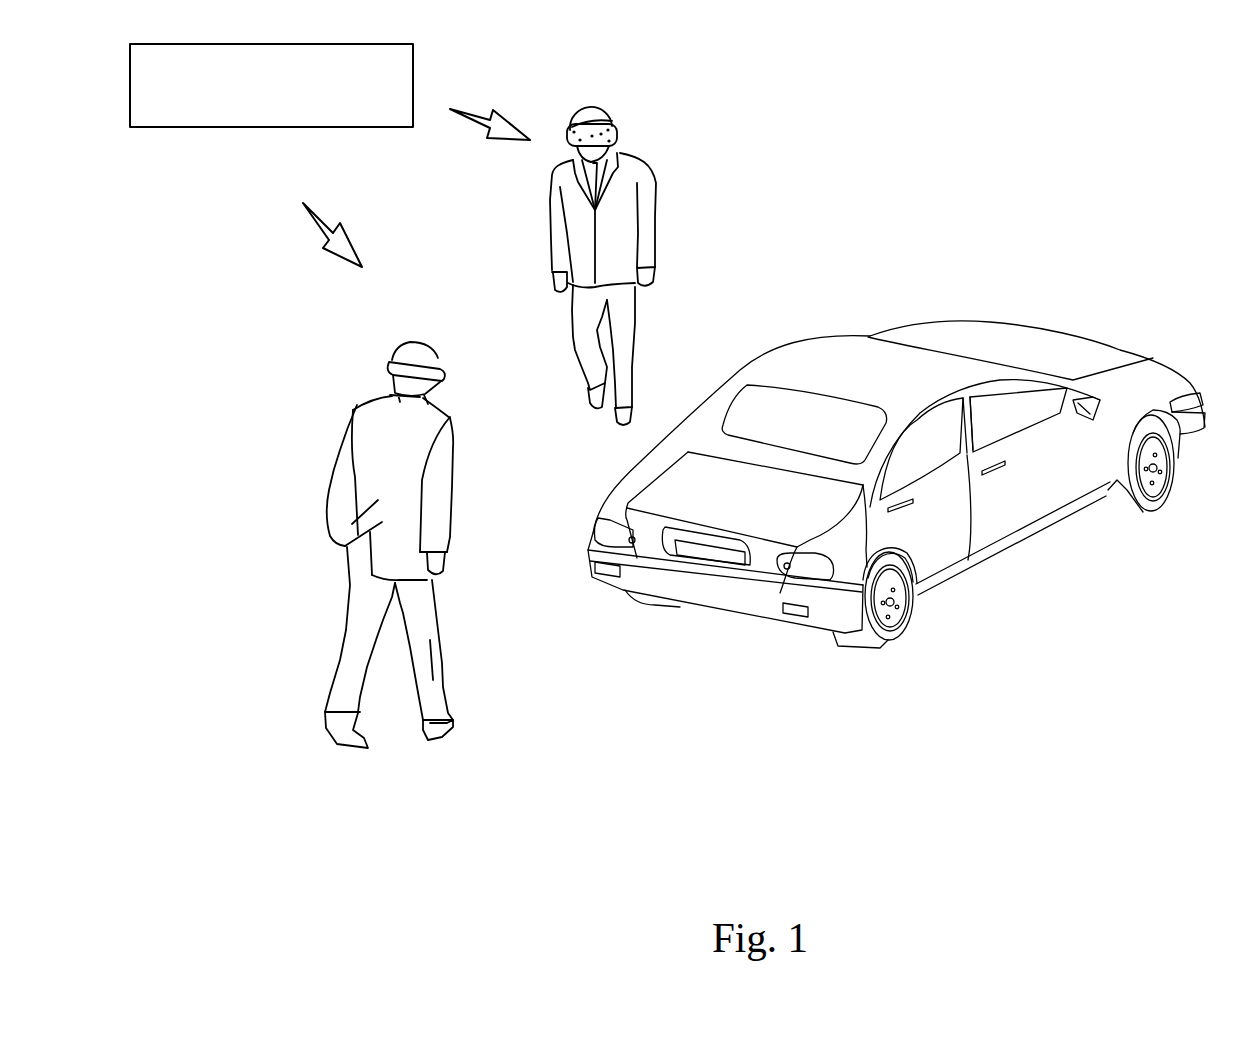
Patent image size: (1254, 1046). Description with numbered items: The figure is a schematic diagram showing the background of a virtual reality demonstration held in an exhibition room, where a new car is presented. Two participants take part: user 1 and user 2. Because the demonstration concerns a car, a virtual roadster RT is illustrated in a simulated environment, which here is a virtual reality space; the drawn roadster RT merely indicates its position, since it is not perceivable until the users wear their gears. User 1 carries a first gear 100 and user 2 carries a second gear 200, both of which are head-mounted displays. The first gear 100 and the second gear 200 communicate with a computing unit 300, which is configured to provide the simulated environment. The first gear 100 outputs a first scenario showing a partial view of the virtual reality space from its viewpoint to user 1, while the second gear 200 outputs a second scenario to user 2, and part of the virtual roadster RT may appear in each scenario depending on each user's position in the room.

The computing unit 300 is at (295, 113).
The second gear 200 is at (620, 131).
The user 2 is at (643, 254).
The first gear 100 is at (445, 378).
The user 1 is at (429, 533).
The virtual roadster RT is at (728, 562).